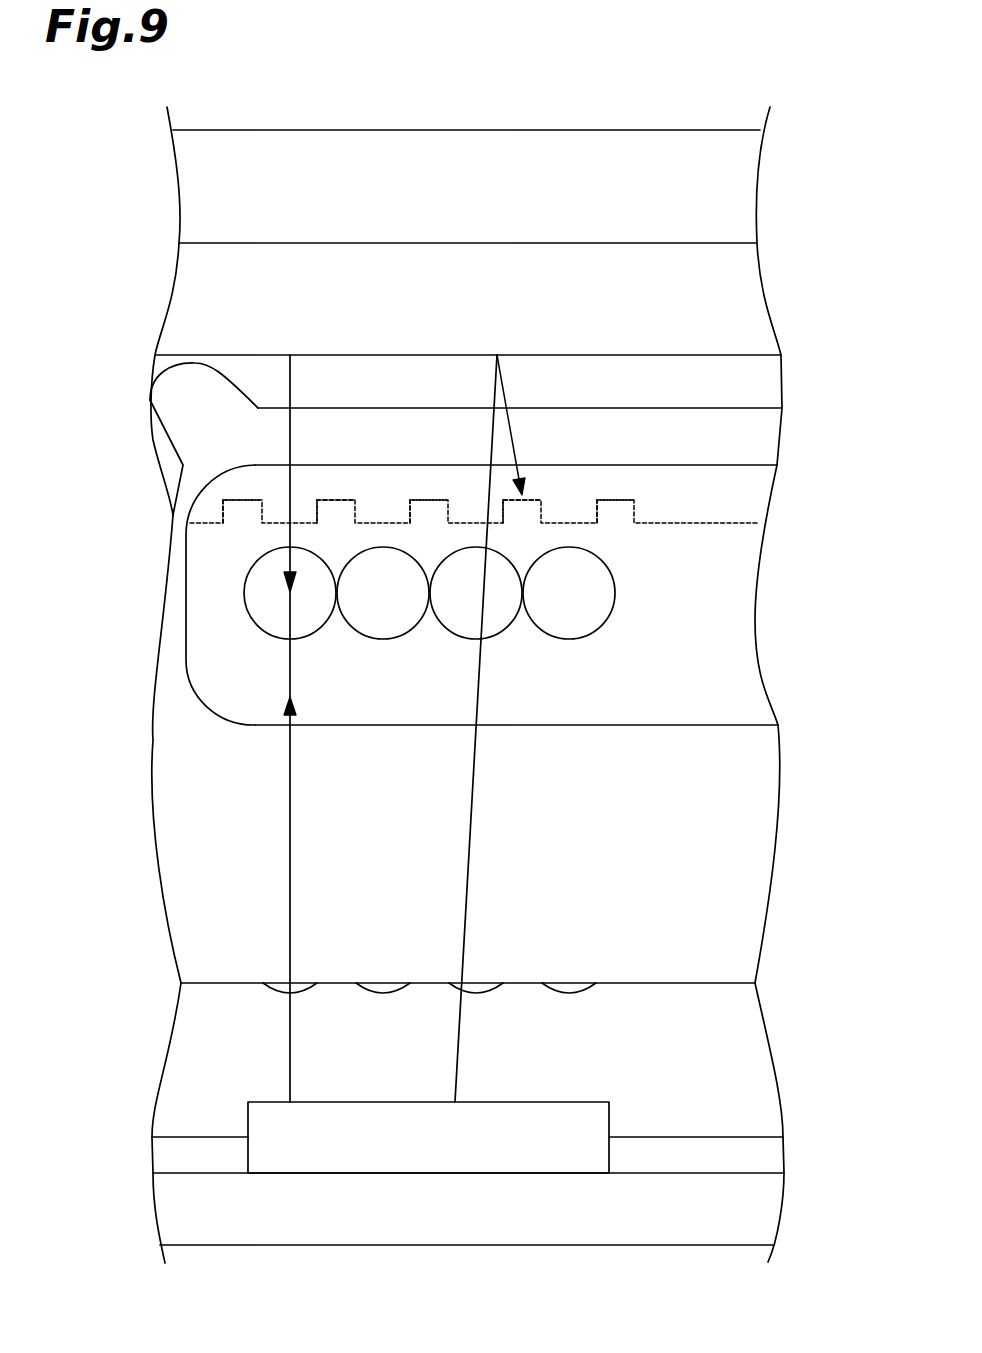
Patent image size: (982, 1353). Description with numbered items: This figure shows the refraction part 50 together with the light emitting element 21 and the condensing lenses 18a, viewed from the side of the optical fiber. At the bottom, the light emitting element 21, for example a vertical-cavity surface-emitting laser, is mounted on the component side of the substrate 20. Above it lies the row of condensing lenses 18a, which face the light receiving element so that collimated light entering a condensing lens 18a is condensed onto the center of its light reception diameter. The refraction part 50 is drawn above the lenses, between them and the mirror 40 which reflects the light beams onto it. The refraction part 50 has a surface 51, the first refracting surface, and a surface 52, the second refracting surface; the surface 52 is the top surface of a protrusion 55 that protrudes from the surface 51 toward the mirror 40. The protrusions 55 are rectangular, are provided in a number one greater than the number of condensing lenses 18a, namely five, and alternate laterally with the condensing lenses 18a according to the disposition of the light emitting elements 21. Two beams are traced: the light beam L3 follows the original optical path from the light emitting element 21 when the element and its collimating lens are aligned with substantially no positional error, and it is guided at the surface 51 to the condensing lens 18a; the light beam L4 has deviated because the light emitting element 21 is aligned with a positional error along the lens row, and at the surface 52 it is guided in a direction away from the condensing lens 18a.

The mirror 40 is at (195, 285).
The refraction part 50 is at (664, 483).
The surface 51 is at (578, 522).
The surface 52 is at (525, 498).
The protrusion 55 is at (535, 500).
The condensing lens 18a is at (592, 1008).
The light beam L3 is at (290, 1065).
The light beam L4 is at (460, 1078).
The light emitting element 21 is at (306, 1160).
The substrate 20 is at (397, 1230).